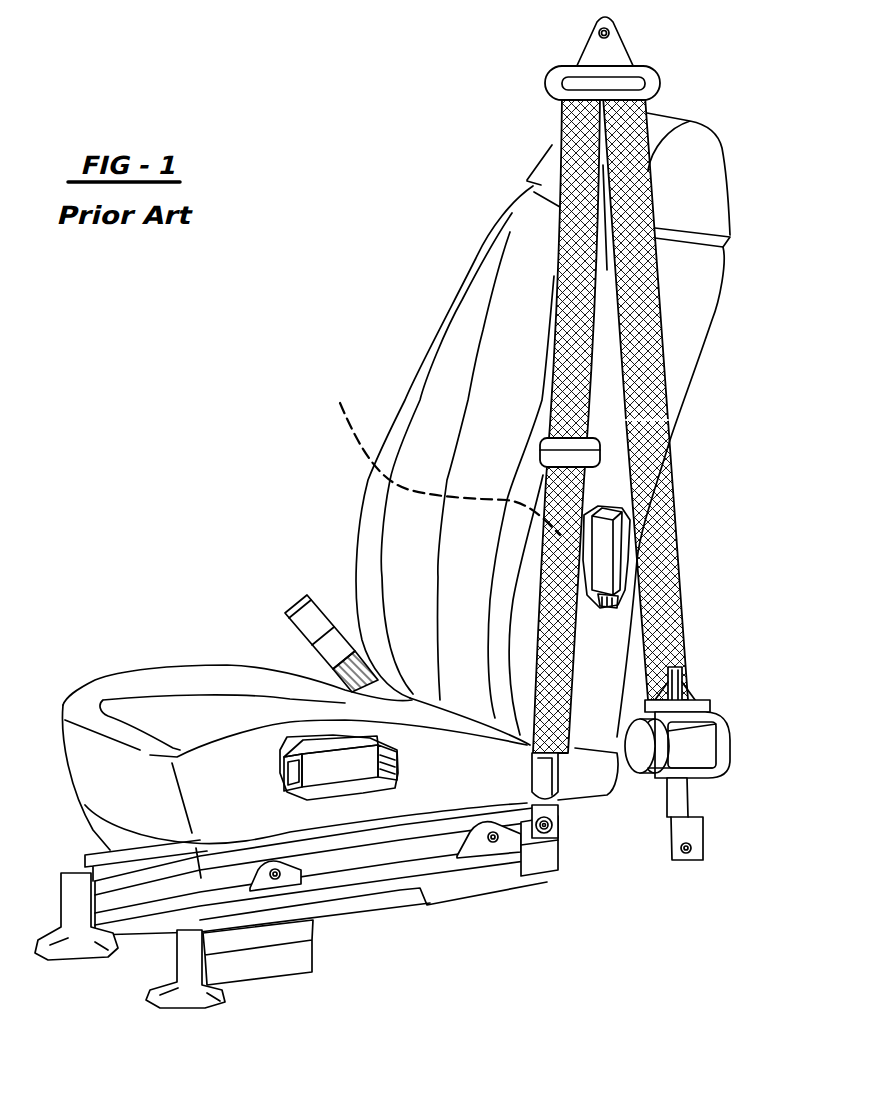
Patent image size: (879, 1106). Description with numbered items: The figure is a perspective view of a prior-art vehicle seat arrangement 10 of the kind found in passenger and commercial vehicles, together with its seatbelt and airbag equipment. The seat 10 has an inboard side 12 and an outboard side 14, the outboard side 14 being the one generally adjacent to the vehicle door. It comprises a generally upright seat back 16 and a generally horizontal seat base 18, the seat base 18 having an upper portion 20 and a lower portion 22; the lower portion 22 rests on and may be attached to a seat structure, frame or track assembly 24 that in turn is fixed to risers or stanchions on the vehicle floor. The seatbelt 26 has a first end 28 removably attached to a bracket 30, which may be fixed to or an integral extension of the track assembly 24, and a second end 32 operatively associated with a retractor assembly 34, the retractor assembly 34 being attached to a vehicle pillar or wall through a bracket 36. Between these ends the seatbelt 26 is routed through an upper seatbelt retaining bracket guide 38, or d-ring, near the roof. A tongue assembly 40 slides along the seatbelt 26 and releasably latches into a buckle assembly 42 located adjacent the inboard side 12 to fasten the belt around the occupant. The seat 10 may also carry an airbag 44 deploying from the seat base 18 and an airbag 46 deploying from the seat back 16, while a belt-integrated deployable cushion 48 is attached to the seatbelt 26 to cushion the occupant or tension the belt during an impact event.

The seat arrangement 10 is at (368, 327).
The inboard side 12 is at (372, 527).
The outboard side 14 is at (607, 492).
The seat back 16 is at (466, 272).
The seat base 18 is at (162, 666).
The upper portion 20 is at (88, 690).
The lower portion 22 is at (110, 836).
The seat structure, frame or track assembly 24 is at (220, 923).
The seatbelt 26 is at (645, 298).
The first end 28 is at (545, 803).
The bracket 30 is at (528, 847).
The second end 32 is at (668, 643).
The retractor assembly 34 is at (703, 748).
The bracket 36 is at (683, 795).
The upper seatbelt retaining bracket guide 38 is at (610, 34).
The tongue assembly 40 is at (585, 455).
The buckle assembly 42 is at (297, 640).
The airbag 44 is at (345, 775).
The airbag 46 is at (630, 570).
The deployable cushion 48 is at (442, 452).